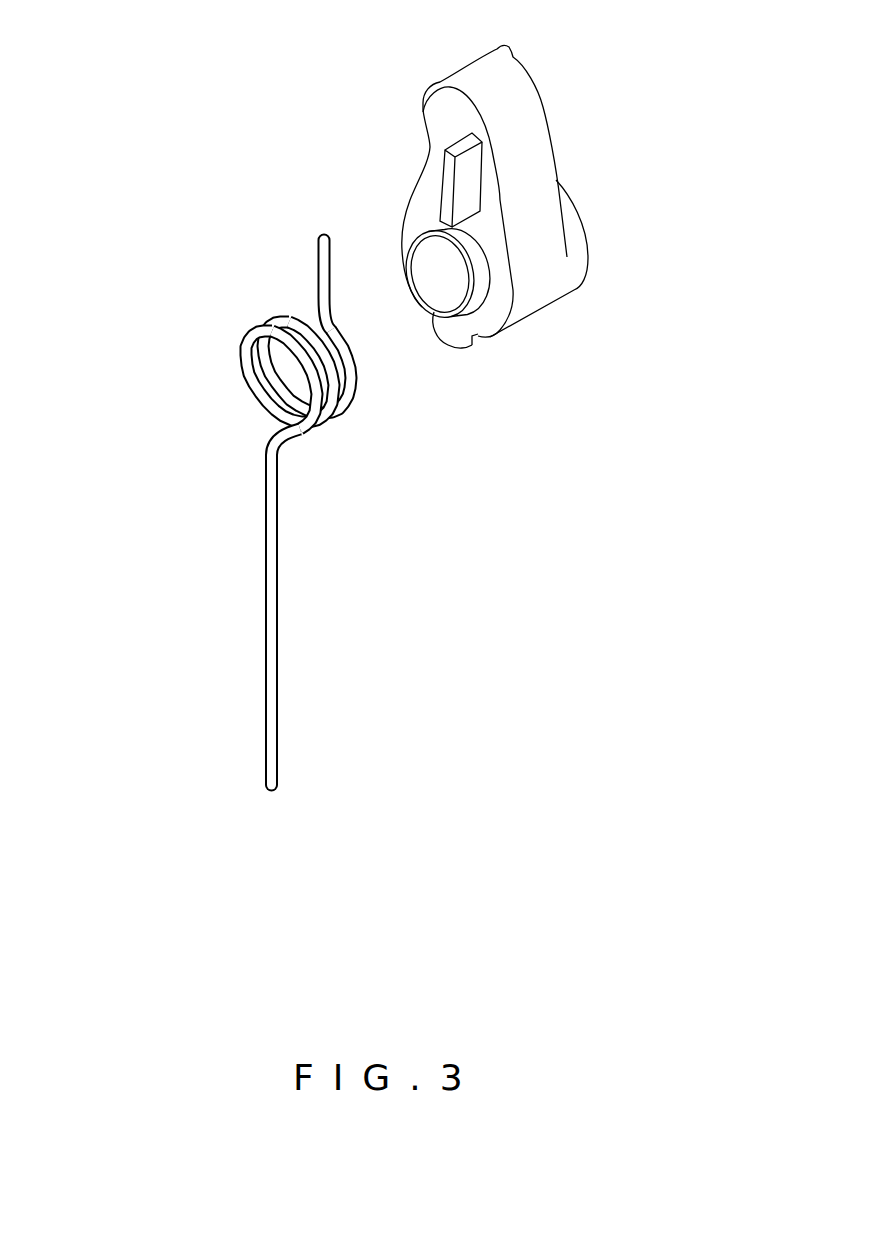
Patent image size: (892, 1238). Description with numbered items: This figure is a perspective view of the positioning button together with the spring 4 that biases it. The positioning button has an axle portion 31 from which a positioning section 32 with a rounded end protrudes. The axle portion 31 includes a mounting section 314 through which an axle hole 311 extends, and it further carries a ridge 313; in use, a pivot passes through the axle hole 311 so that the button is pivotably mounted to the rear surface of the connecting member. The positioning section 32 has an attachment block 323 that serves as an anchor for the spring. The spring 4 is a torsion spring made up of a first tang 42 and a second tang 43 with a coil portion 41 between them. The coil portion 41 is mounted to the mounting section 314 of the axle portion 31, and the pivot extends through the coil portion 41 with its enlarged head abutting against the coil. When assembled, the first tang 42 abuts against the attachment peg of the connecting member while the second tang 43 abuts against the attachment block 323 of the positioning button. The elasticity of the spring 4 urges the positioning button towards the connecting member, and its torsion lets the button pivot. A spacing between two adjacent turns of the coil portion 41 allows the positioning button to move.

The spring 4 is at (245, 512).
The coil portion 41 is at (252, 375).
The first tang 42 is at (273, 578).
The second tang 43 is at (320, 290).
The axle portion 31 is at (541, 315).
The axle hole 311 is at (440, 317).
The ridge 313 is at (473, 342).
The mounting section 314 is at (480, 290).
The positioning section 32 is at (522, 175).
The attachment block 323 is at (463, 188).